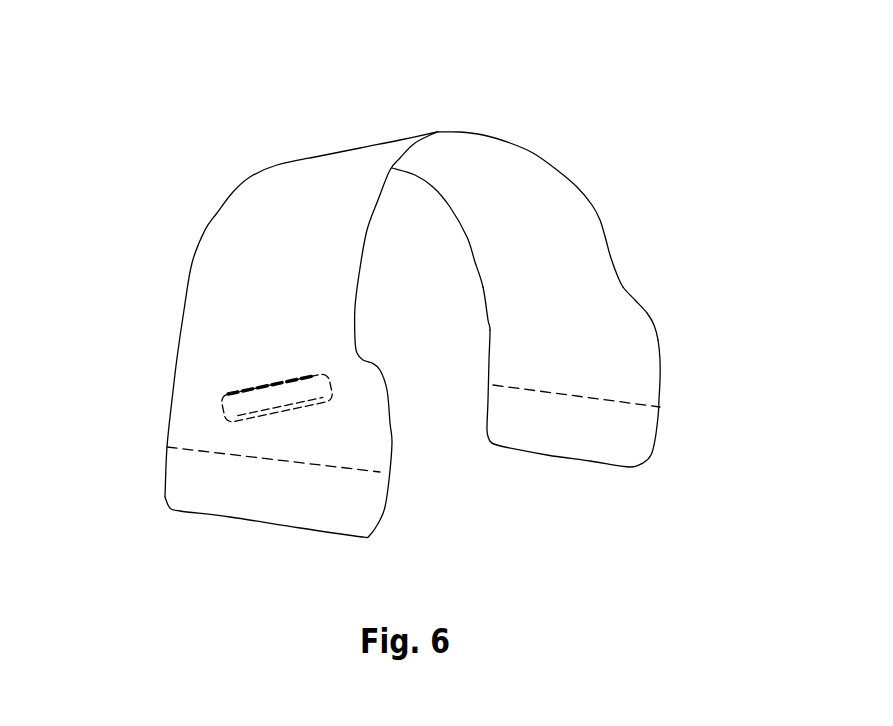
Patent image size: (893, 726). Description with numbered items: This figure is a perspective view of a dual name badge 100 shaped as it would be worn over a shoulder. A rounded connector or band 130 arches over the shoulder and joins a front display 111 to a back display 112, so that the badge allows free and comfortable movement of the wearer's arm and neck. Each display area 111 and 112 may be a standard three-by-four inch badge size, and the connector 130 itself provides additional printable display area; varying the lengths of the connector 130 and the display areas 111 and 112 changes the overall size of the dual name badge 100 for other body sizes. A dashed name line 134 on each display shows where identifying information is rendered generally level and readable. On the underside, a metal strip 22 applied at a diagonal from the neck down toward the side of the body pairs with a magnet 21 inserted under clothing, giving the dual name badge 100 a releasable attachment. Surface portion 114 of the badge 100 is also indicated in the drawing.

The dual name badge 100 is at (212, 128).
The front display 111 is at (202, 367).
The back display 112 is at (658, 337).
The second arm band portion 114 is at (600, 347).
The connector 130 is at (473, 153).
The name line 134 is at (210, 450).
The magnet 21 is at (298, 392).
The metal strip 22 is at (290, 410).